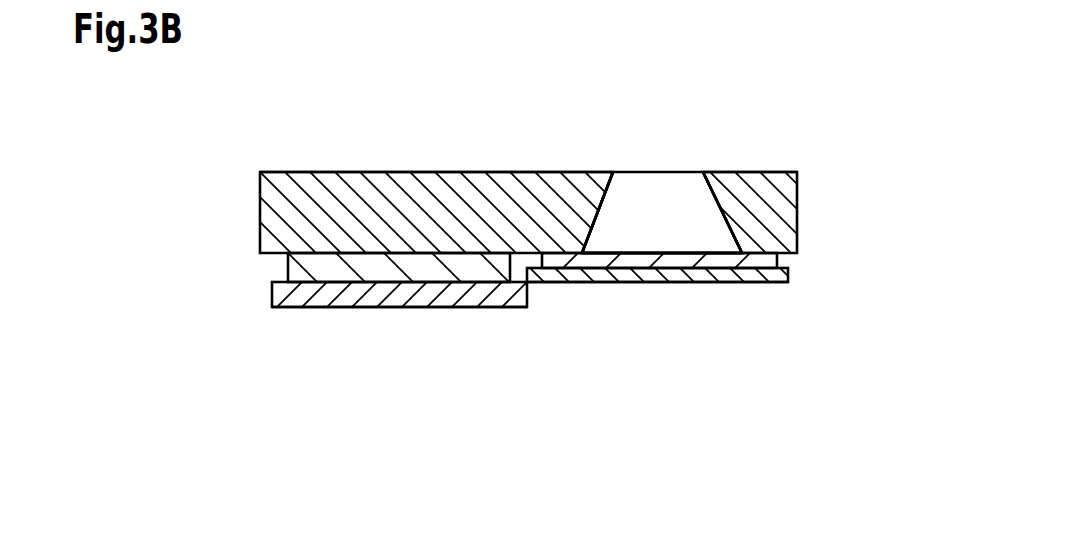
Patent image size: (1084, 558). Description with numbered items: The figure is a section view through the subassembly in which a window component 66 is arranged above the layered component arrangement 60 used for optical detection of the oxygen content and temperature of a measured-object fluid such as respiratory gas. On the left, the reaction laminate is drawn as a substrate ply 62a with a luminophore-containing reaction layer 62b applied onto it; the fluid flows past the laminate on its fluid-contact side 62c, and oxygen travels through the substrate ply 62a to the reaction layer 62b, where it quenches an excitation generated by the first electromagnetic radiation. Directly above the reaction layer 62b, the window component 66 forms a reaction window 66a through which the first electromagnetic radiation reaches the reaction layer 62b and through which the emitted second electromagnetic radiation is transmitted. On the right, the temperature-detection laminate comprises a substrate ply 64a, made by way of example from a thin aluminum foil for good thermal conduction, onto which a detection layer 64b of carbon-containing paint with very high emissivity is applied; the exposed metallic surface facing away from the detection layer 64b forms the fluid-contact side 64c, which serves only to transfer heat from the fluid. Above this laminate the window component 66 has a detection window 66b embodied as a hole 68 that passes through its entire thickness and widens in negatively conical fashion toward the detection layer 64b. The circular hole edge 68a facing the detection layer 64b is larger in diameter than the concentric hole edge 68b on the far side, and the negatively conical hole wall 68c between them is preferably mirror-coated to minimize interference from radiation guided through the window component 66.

The layered component arrangement 60 is at (519, 438).
The substrate ply 62a is at (368, 295).
The luminophore-containing reaction layer 62b is at (289, 268).
The fluid-contact side 62c is at (435, 316).
The substrate ply 64a is at (752, 278).
The detection layer 64b is at (761, 262).
The fluid-contact side 64c is at (672, 294).
The window component 66 is at (763, 214).
The reaction window 66a is at (372, 196).
The detection window 66b is at (670, 210).
The hole 68 is at (662, 212).
The circular hole edge 68a is at (584, 256).
The concentric hole edge 68b is at (613, 172).
The negatively conical hole wall 68c is at (610, 224).